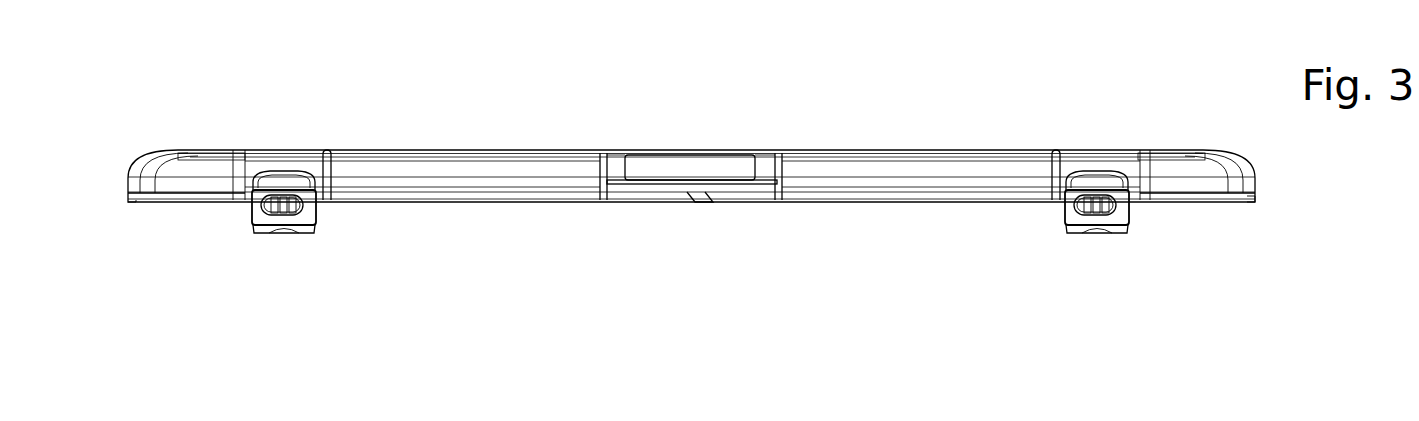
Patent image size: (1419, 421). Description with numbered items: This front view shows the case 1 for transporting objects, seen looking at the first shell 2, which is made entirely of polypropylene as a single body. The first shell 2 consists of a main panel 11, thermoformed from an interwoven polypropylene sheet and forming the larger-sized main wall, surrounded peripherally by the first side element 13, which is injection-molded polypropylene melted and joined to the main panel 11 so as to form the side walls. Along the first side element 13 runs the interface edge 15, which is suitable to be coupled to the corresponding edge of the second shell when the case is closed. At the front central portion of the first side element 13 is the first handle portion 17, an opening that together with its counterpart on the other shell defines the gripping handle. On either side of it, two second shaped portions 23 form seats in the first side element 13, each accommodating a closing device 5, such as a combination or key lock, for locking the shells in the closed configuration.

The case 1 is at (116, 126).
The first shell 2 is at (113, 221).
The closing device 5 is at (307, 218).
The main panel 11 is at (430, 150).
The first side element 13 is at (1232, 187).
The interface edge 15 is at (870, 203).
The first handle portion 17 is at (716, 158).
The second shaped portion 23 is at (285, 162).